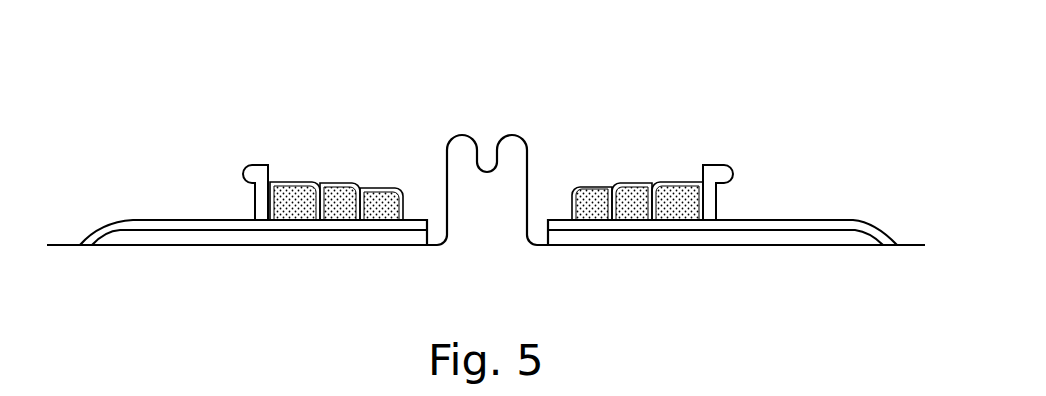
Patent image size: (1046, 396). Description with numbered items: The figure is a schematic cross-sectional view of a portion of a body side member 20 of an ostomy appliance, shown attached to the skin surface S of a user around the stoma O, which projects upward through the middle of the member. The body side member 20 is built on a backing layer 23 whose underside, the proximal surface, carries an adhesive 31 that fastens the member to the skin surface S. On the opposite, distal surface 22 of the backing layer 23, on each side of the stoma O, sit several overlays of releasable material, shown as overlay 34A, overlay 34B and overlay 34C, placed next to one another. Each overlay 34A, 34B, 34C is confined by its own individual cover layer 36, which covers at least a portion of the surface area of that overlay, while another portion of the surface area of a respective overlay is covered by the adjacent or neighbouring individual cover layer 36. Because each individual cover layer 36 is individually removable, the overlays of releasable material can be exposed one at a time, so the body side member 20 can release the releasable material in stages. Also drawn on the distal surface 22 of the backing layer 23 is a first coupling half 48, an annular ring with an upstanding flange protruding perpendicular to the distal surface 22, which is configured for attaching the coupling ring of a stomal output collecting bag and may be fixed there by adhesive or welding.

The body side member 20 is at (209, 153).
The distal surface 22 is at (810, 220).
The backing layer 23 is at (128, 220).
The adhesive 31 is at (733, 237).
The overlay of releasable material 34A is at (288, 190).
The overlay of releasable material 34B is at (340, 193).
The overlay of releasable material 34C is at (382, 200).
The individual cover layer 36 is at (292, 183).
The first coupling half 48 is at (722, 175).
The stoma O is at (514, 148).
The skin surface S is at (900, 243).